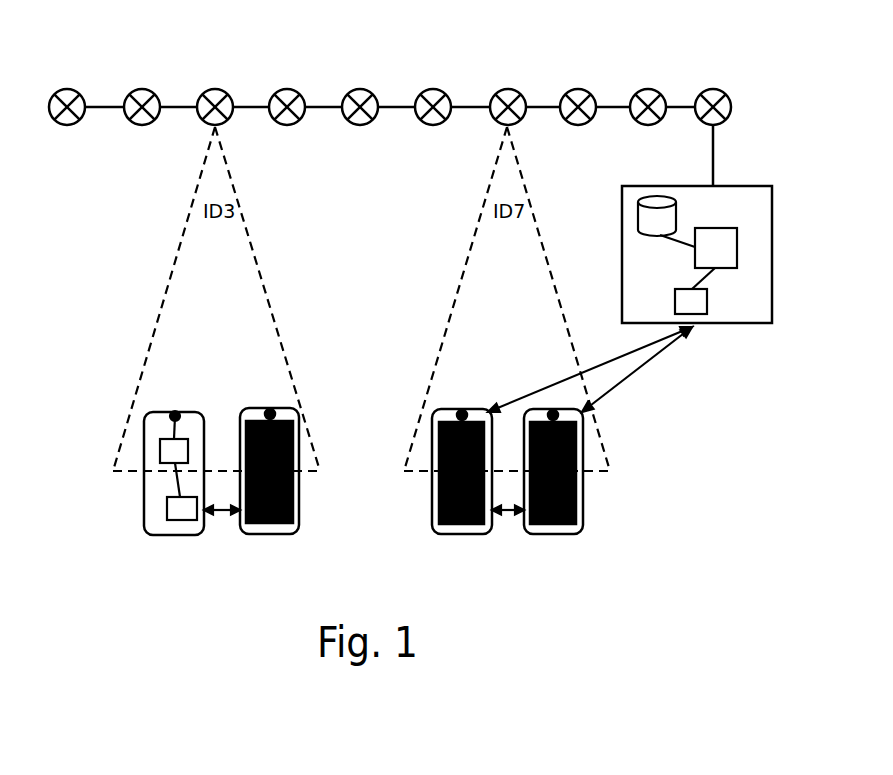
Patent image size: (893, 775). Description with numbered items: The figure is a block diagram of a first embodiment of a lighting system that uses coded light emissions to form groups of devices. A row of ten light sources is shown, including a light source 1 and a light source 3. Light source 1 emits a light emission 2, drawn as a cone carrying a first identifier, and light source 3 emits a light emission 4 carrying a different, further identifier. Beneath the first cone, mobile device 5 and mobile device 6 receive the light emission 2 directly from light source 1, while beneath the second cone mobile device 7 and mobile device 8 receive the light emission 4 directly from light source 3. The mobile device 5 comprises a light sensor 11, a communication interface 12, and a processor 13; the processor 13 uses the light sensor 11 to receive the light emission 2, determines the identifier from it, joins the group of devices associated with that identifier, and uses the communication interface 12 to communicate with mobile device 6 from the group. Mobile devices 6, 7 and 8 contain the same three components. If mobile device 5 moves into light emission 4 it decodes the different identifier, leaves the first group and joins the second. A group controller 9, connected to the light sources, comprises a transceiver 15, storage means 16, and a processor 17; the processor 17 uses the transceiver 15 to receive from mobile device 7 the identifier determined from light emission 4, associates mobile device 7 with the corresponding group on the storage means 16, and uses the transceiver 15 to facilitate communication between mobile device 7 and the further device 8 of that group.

The light source 1 is at (214, 89).
The light emission 2 is at (230, 170).
The light source 3 is at (507, 89).
The light emission 4 is at (517, 160).
The mobile device 5 is at (172, 535).
The mobile device 6 is at (268, 534).
The mobile device 7 is at (458, 534).
The mobile device 8 is at (553, 534).
The group controller 9 is at (737, 324).
The light sensor 11 is at (170, 412).
The communication interface 12 is at (182, 508).
The processor 13 is at (174, 468).
The transceiver 15 is at (691, 301).
The storage means 16 is at (666, 221).
The processor 17 is at (714, 258).